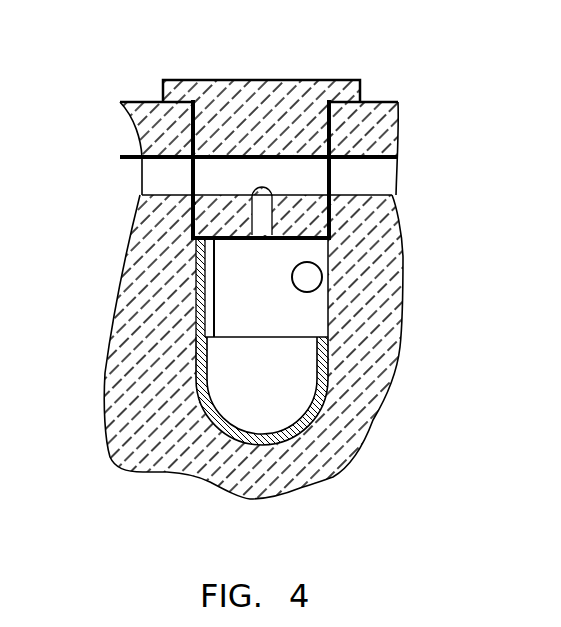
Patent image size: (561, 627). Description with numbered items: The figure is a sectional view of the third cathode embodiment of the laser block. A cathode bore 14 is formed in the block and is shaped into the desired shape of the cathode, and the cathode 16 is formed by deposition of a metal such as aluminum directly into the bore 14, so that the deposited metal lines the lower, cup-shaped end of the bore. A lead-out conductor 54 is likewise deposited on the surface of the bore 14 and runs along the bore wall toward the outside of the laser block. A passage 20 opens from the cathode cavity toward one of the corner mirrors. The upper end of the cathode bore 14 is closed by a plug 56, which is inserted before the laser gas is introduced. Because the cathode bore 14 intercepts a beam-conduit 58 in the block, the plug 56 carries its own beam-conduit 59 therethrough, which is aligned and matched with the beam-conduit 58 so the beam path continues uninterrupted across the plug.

The plug 56 is at (323, 80).
The beam-conduit 58 is at (382, 177).
The beam-conduit 59 is at (218, 177).
The lead-out conductor 54 is at (210, 278).
The passage 20 is at (292, 283).
The cathode bore 14 is at (328, 319).
The cathode 16 is at (230, 427).